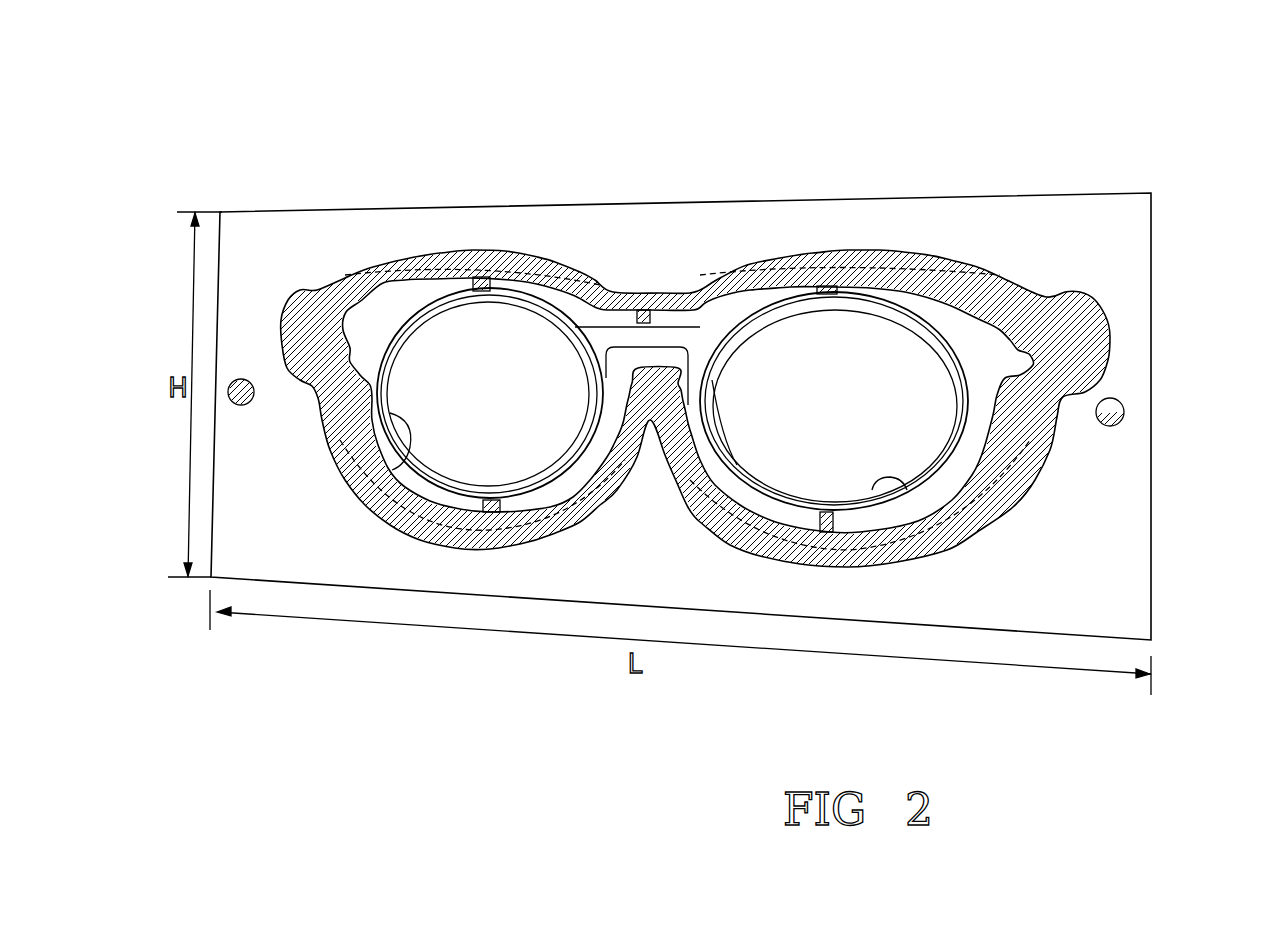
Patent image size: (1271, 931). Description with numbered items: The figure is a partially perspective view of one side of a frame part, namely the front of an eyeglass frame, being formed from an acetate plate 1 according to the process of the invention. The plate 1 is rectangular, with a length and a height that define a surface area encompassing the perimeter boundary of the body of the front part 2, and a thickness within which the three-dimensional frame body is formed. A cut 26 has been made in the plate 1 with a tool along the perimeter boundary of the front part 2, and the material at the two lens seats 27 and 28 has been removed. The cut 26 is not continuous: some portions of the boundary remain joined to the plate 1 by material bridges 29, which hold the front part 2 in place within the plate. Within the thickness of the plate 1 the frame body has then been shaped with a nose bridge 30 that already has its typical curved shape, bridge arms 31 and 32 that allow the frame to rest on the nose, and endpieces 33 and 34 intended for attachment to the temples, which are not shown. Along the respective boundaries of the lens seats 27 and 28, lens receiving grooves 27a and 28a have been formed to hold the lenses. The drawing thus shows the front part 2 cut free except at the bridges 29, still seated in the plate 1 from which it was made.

The acetate plate 1 is at (303, 247).
The front part 2 is at (590, 267).
The cut 26 is at (787, 282).
The lens seat 27 is at (440, 500).
The lens receiving groove 27a is at (463, 427).
The lens seat 28 is at (795, 467).
The lens receiving groove 28a is at (866, 490).
The material bridge 29 is at (488, 277).
The nose bridge 30 is at (757, 272).
The bridge arm 31 is at (612, 392).
The bridge arm 32 is at (716, 407).
The endpiece 33 is at (360, 337).
The endpiece 34 is at (1093, 383).